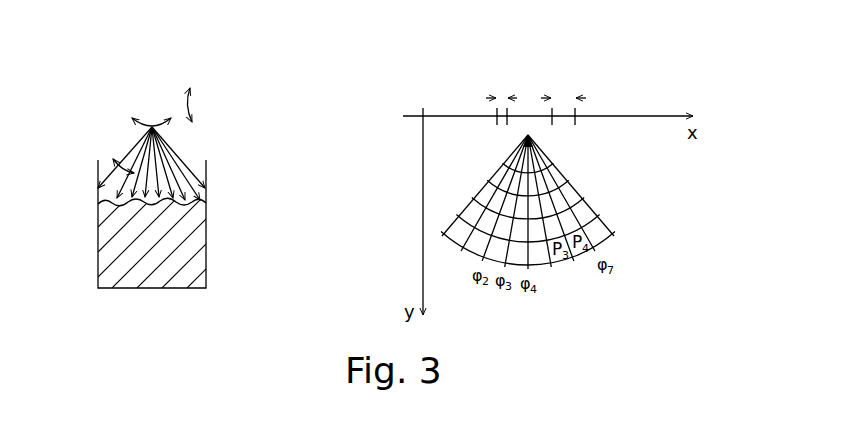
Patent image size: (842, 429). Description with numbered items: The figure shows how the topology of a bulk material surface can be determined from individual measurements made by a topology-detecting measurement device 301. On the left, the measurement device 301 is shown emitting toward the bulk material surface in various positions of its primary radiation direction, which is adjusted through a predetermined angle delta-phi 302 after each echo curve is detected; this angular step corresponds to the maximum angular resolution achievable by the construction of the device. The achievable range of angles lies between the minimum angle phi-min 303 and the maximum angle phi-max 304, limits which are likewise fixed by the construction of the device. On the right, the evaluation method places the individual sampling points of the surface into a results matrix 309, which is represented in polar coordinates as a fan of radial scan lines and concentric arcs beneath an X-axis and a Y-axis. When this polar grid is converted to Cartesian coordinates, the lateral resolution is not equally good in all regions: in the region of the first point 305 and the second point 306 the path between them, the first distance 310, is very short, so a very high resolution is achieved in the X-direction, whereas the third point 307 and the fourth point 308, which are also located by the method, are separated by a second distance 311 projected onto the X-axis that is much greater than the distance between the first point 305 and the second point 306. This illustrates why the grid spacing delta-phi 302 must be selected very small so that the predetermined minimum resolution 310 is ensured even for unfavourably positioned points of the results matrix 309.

The topology-detecting measurement device 301 is at (141, 100).
The predetermined angle Δφ 302 is at (108, 126).
The φmin 303 is at (443, 235).
The φmax 304 is at (616, 236).
The point P1 305 is at (488, 199).
The point P2 306 is at (498, 192).
The point P3 307 is at (553, 267).
The point P4 308 is at (577, 259).
The results matrix 309 is at (640, 173).
The distance ΔX12 310 is at (498, 67).
The distance ΔX34 311 is at (563, 67).